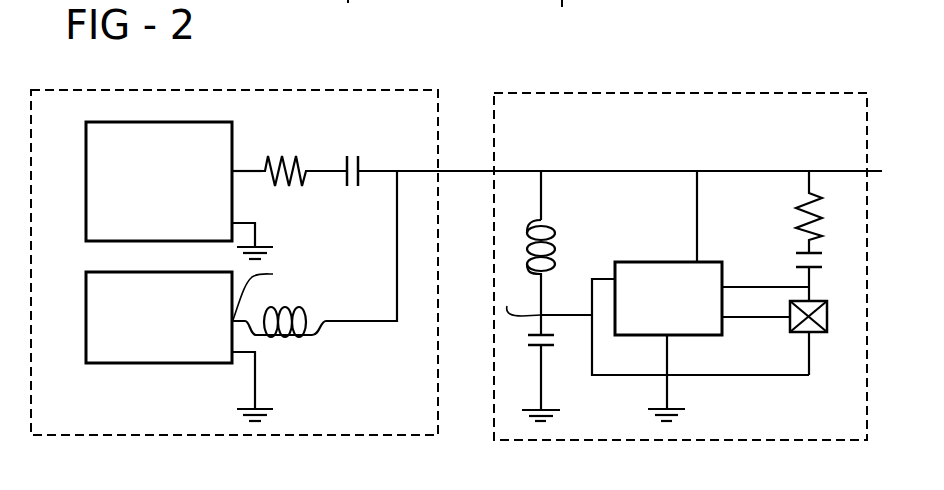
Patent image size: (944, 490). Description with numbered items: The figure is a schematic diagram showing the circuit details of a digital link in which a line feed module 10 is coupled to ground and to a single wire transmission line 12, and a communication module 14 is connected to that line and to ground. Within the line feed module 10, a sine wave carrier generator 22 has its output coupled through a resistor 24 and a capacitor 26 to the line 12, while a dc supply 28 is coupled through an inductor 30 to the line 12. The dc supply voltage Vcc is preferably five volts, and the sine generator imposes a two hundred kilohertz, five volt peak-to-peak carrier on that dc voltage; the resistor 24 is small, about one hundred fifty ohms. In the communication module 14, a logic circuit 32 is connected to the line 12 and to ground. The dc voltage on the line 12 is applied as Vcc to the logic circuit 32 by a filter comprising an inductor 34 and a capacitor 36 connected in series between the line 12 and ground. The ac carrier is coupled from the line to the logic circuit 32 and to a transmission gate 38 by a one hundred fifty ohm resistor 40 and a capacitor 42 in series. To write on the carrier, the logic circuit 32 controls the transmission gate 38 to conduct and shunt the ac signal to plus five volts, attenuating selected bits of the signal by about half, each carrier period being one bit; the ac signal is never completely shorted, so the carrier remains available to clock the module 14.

The line feed module 10 is at (352, 437).
The single wire transmission line 12 is at (468, 170).
The communication module 14 is at (640, 442).
The sine wave carrier generator 22 is at (190, 122).
The resistor 24 is at (280, 152).
The capacitor 26 is at (358, 163).
The dc supply 28 is at (138, 363).
The inductor 30 is at (293, 337).
The logic circuit 32 is at (705, 335).
The inductor 34 is at (556, 247).
The capacitor 36 is at (530, 346).
The transmission gate 38 is at (820, 334).
The resistor 40 is at (795, 216).
The capacitor 42 is at (798, 253).